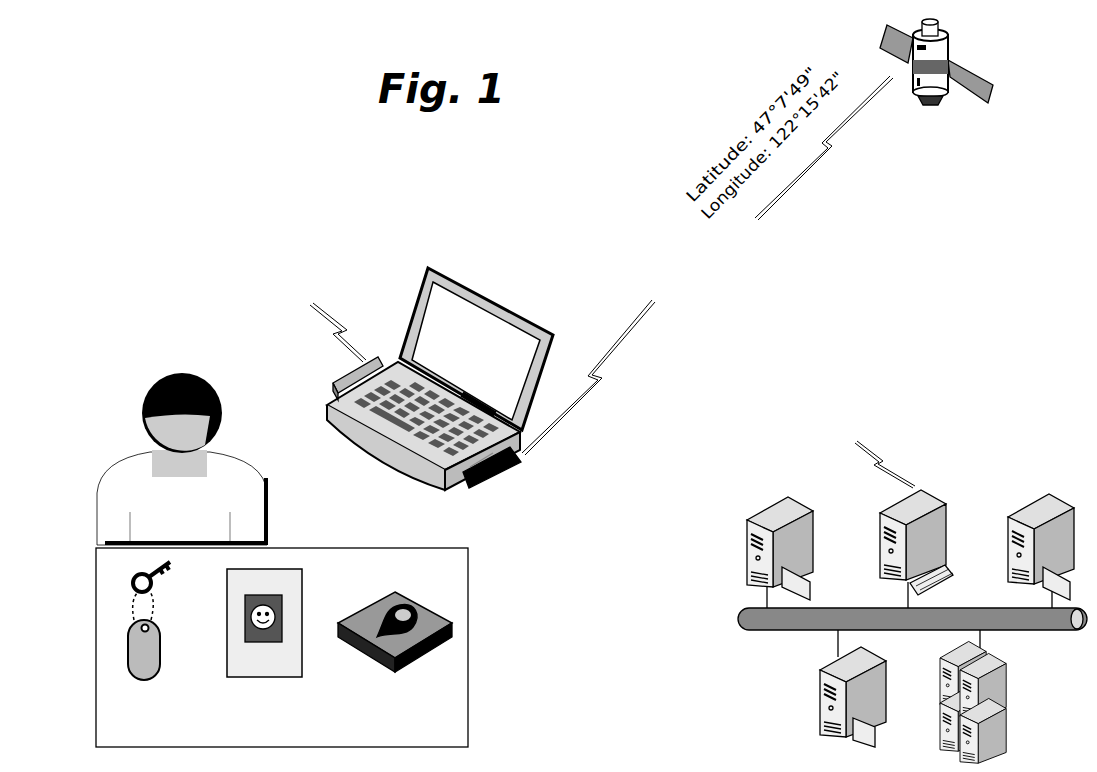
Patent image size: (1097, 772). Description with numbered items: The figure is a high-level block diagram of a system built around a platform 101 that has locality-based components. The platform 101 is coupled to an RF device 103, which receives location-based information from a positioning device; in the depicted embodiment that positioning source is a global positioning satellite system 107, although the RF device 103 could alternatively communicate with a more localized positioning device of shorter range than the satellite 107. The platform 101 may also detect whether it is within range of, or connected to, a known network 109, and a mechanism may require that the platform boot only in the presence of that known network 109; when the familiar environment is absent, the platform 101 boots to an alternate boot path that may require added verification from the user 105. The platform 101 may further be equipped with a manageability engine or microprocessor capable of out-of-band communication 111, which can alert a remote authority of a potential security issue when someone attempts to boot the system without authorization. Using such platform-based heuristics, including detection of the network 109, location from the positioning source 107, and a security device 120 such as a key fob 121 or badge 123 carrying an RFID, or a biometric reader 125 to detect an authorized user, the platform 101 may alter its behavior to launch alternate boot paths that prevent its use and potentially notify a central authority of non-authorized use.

The platform 101 is at (460, 280).
The RF device 103 is at (497, 477).
The user 105 is at (172, 375).
The global positioning satellite (GPS) system 107 is at (928, 105).
The known network 109 is at (966, 483).
The out-of-band communication 111 is at (340, 376).
The security device 120 is at (468, 732).
The key fob 121 is at (128, 652).
The badge 123 is at (300, 613).
The biometric reader 125 is at (438, 648).